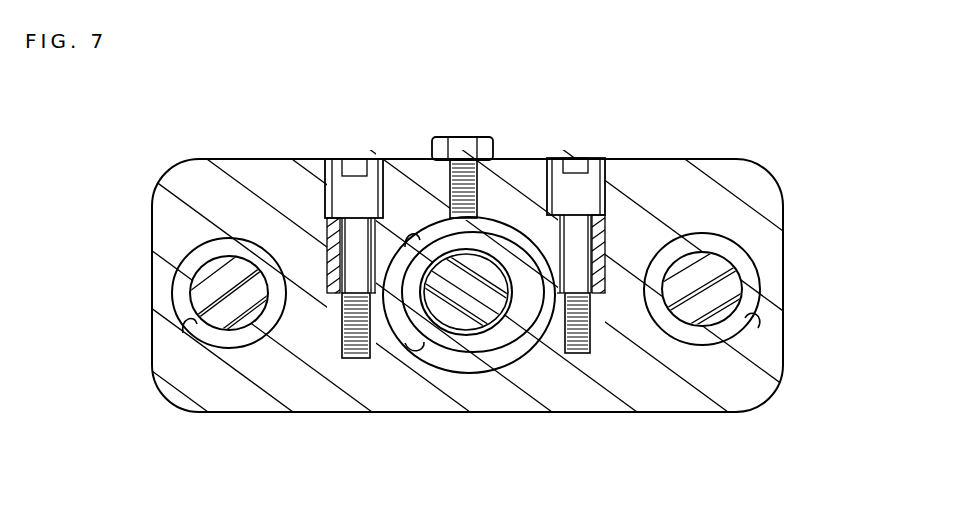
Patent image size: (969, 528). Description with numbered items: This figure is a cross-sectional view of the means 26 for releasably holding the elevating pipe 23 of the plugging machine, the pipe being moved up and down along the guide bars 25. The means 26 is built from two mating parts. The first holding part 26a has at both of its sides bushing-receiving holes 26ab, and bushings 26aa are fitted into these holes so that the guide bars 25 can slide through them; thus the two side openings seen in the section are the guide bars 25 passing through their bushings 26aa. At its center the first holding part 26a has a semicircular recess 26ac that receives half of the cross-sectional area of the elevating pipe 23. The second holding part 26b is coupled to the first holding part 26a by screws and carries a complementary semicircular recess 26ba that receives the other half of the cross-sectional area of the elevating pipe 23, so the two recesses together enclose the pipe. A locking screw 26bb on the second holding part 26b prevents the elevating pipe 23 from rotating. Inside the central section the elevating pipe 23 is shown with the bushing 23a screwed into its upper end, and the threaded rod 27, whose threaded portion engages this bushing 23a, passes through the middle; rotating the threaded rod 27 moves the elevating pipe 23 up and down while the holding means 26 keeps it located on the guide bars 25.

The elevating pipe 23 is at (520, 228).
The bushing 23a is at (492, 247).
The guide bars 25 is at (229, 272).
The means for releasably holding the elevating pipe 26 is at (484, 270).
The first holding part 26a is at (745, 351).
The bushings 26aa is at (183, 272).
The bushing-receiving holes 26ab is at (188, 333).
The semicircular recess 26ac is at (410, 346).
The second holding part 26b is at (397, 163).
The semicircular recess 26ba is at (360, 212).
The locking screw 26bb is at (463, 147).
The threaded rod 27 is at (465, 297).